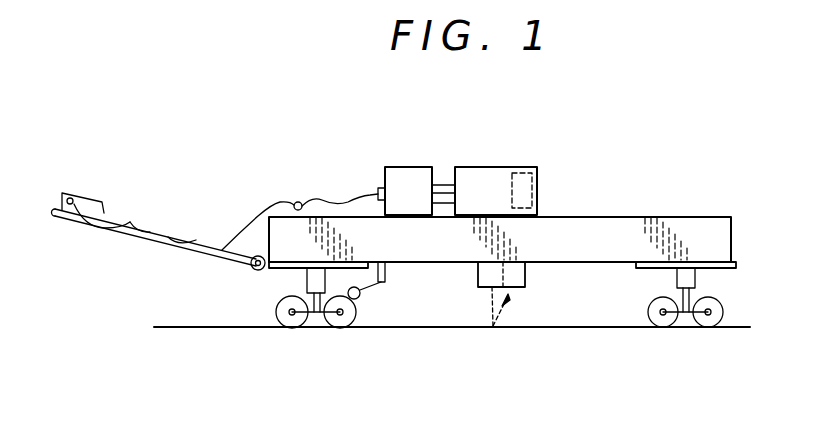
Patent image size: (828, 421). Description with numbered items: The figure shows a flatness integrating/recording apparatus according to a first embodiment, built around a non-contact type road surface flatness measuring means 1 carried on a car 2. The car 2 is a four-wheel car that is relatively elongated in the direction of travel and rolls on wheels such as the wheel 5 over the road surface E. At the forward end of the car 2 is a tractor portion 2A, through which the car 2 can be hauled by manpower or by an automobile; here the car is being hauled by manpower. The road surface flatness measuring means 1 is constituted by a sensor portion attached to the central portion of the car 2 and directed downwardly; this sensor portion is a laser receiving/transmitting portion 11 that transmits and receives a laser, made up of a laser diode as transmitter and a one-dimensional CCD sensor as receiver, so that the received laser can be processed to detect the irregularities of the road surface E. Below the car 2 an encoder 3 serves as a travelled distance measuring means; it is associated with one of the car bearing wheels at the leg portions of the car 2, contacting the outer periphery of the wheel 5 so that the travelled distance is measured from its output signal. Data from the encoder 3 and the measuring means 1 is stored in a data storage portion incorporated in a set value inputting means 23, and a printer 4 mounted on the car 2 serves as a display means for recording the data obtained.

The road surface flatness measuring means 1 is at (479, 170).
The car 2 is at (627, 225).
The tractor portion 2A is at (142, 229).
The set value inputting means 23 is at (80, 198).
The encoder 3 is at (360, 294).
The printer 4 is at (522, 153).
The wheel 5 is at (340, 318).
The laser receiving/transmitting portion 11 is at (525, 277).
The road surface E is at (190, 326).